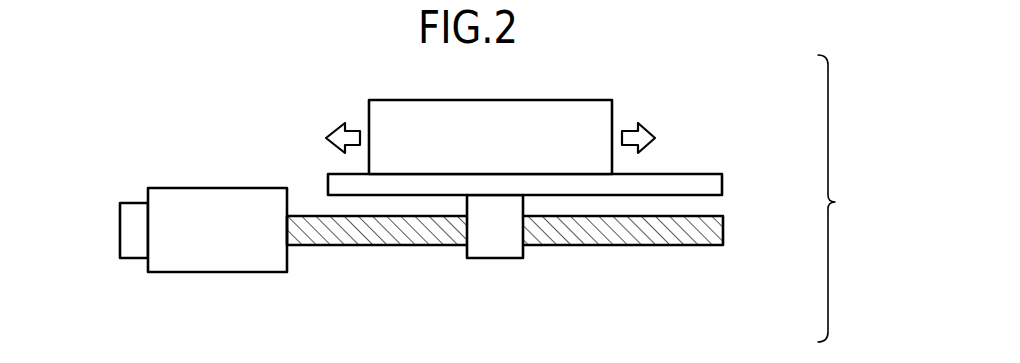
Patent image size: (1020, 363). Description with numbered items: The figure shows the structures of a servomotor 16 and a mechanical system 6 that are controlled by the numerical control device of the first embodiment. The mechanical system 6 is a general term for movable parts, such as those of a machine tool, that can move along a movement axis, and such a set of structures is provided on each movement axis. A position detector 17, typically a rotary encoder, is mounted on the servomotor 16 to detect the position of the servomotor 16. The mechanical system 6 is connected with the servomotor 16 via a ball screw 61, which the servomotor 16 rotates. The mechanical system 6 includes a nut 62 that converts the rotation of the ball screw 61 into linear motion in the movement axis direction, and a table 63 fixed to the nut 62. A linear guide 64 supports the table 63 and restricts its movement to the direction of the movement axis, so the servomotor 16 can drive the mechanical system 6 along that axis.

The mechanical system 6 is at (835, 198).
The servomotor 16 is at (216, 188).
The position detector 17 is at (133, 203).
The ball screw 61 is at (699, 245).
The nut 62 is at (493, 258).
The table 63 is at (582, 100).
The linear guide 64 is at (700, 174).